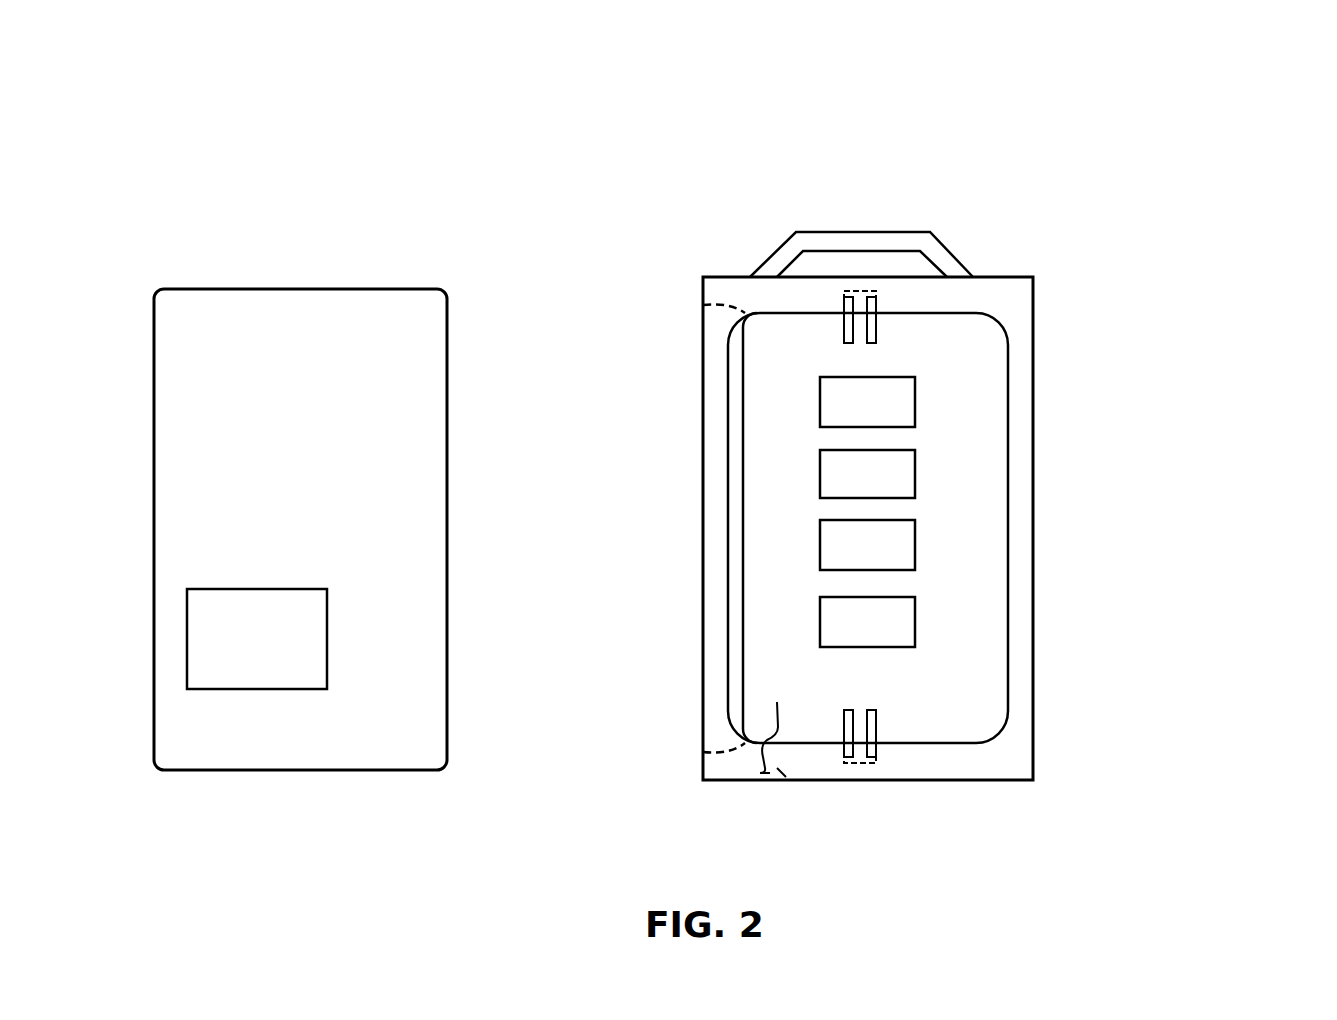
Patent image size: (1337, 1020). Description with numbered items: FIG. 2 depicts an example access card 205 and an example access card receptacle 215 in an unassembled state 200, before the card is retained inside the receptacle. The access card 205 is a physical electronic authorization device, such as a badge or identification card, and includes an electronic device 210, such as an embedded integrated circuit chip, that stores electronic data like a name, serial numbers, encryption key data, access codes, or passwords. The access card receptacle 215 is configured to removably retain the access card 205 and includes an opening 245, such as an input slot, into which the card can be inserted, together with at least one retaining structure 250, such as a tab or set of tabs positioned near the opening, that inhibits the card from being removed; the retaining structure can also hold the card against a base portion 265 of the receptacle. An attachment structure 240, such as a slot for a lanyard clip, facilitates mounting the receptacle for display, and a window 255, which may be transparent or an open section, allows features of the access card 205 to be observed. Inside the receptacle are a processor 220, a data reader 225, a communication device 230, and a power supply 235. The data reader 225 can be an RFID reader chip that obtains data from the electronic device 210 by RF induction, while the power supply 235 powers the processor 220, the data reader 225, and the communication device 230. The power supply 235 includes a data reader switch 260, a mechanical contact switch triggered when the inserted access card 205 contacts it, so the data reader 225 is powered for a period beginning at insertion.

The unassembled state 200 is at (335, 37).
The access card 205 is at (282, 417).
The electronic device 210 is at (239, 681).
The access card receptacle 215 is at (732, 160).
The processor 220 is at (915, 400).
The data reader 225 is at (915, 470).
The communication device 230 is at (915, 541).
The power supply 235 is at (915, 616).
The attachment structure 240 is at (860, 232).
The opening 245 is at (692, 520).
The retaining structure 250 is at (877, 332).
The window 255 is at (997, 322).
The data reader switch 260 is at (774, 726).
The base portion 265 is at (770, 387).